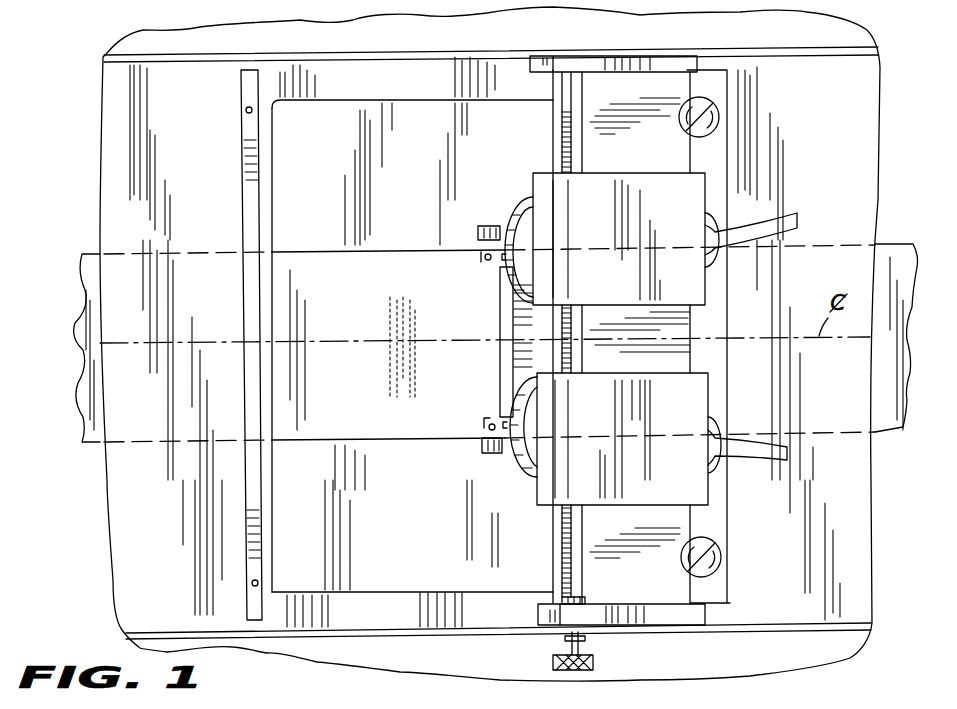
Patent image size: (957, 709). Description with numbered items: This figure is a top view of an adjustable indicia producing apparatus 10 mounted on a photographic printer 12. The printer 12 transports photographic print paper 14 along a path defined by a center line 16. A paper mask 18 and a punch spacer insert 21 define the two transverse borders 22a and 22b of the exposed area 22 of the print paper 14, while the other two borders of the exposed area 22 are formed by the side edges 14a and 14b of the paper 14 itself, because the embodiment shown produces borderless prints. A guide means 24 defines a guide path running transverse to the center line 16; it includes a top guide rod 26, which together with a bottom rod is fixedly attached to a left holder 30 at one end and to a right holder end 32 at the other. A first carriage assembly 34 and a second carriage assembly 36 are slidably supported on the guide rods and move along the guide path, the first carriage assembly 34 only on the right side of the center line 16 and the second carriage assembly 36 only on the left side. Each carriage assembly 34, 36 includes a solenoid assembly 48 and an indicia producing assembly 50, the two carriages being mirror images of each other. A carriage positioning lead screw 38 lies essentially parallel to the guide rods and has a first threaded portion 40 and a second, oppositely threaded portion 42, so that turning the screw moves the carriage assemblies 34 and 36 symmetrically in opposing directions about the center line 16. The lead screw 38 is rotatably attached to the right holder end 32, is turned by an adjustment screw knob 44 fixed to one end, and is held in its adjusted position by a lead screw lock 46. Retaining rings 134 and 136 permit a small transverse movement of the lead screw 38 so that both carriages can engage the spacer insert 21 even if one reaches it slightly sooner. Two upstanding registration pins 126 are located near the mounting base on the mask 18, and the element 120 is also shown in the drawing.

The adjustable indicia producing apparatus 10 is at (453, 408).
The photographic printer 12 is at (101, 579).
The photographic print paper 14 is at (122, 273).
The side edge of print paper 14a is at (388, 469).
The side edge of print paper 14b is at (388, 233).
The center line 16 is at (386, 347).
The paper mask 18 is at (402, 72).
The punch spacer insert 21 is at (500, 318).
The exposed area 22 is at (320, 262).
The transverse border 22a is at (275, 298).
The transverse border 22b is at (499, 326).
The guide means 24 is at (698, 631).
The top guide rod 26 is at (587, 350).
The left holder 30 is at (676, 60).
The right holder end 32 is at (667, 613).
The first carriage assembly 34 is at (712, 397).
The second carriage assembly 36 is at (710, 182).
The carriage positioning lead screw 38 is at (578, 322).
The first threaded portion 40 is at (576, 538).
The second oppositely threaded portion 42 is at (571, 125).
The adjustment screw knob 44 is at (552, 661).
The lead screw lock 46 is at (540, 617).
The solenoid assembly 48 is at (515, 213).
The indicia producing assembly 50 is at (478, 231).
The mounting plate 120 is at (693, 525).
The registration pins 126 is at (721, 110).
The retaining ring 134 is at (563, 637).
The retaining ring 136 is at (589, 598).